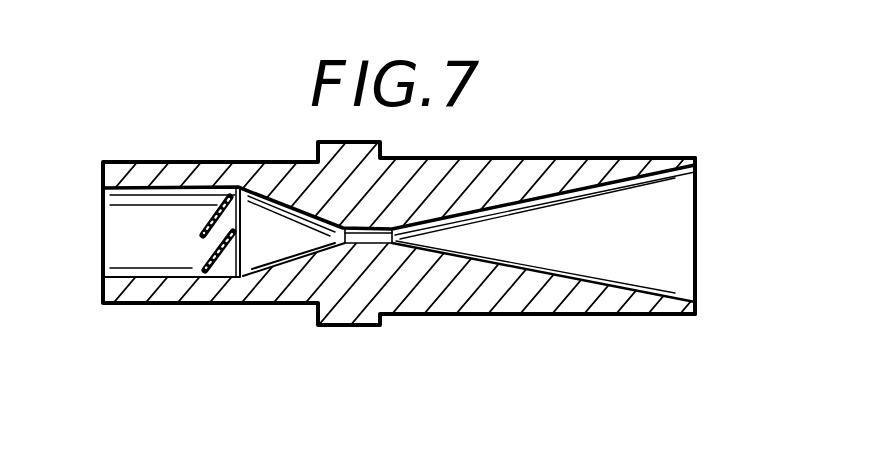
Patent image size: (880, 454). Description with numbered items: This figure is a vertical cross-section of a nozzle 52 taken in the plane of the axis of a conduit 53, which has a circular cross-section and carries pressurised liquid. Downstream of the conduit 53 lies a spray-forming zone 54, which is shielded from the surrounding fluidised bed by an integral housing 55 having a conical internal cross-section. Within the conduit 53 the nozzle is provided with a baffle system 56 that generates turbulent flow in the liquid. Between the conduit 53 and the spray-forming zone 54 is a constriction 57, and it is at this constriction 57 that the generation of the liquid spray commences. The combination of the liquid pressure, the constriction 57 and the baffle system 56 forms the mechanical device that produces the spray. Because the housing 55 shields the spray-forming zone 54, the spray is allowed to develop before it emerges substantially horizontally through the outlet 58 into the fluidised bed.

The nozzle 52 is at (462, 150).
The conduit 53 is at (143, 232).
The spray-forming zone 54 is at (603, 240).
The integral housing 55 is at (597, 183).
The baffle system 56 is at (233, 250).
The constriction 57 is at (366, 245).
The outlet 58 is at (697, 210).